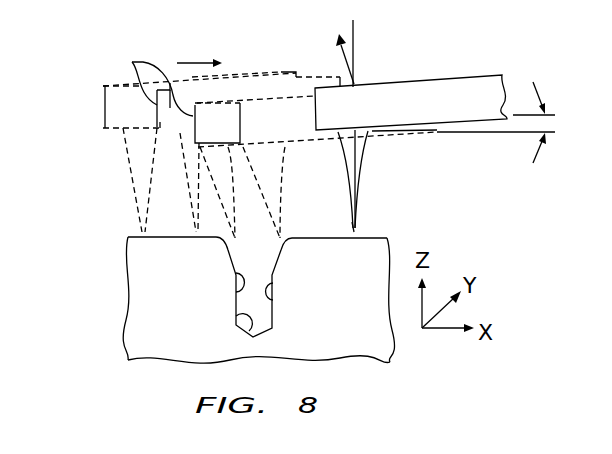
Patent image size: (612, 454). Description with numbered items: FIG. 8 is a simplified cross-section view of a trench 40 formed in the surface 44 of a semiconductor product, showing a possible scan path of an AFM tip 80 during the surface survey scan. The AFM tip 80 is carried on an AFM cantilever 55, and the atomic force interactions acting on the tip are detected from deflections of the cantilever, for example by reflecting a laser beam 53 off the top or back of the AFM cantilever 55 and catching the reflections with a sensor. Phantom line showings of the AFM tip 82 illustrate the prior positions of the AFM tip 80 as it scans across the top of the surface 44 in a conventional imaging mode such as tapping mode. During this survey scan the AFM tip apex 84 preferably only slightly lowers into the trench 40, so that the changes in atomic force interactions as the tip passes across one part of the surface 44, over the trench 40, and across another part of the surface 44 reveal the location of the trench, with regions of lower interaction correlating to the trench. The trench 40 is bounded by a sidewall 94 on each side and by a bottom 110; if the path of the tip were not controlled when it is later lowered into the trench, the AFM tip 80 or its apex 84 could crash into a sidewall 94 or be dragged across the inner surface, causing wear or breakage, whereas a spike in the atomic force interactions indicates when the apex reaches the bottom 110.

The AFM tip (phantom line showings) 82 is at (268, 122).
The AFM cantilever 55 is at (445, 80).
The laser beam 53 is at (356, 40).
The AFM tip 80 is at (360, 152).
The AFM tip apex 84 is at (350, 228).
The surface 44 is at (180, 233).
The trench 40 is at (253, 252).
The sidewall 94 is at (234, 293).
The bottom 110 is at (234, 323).